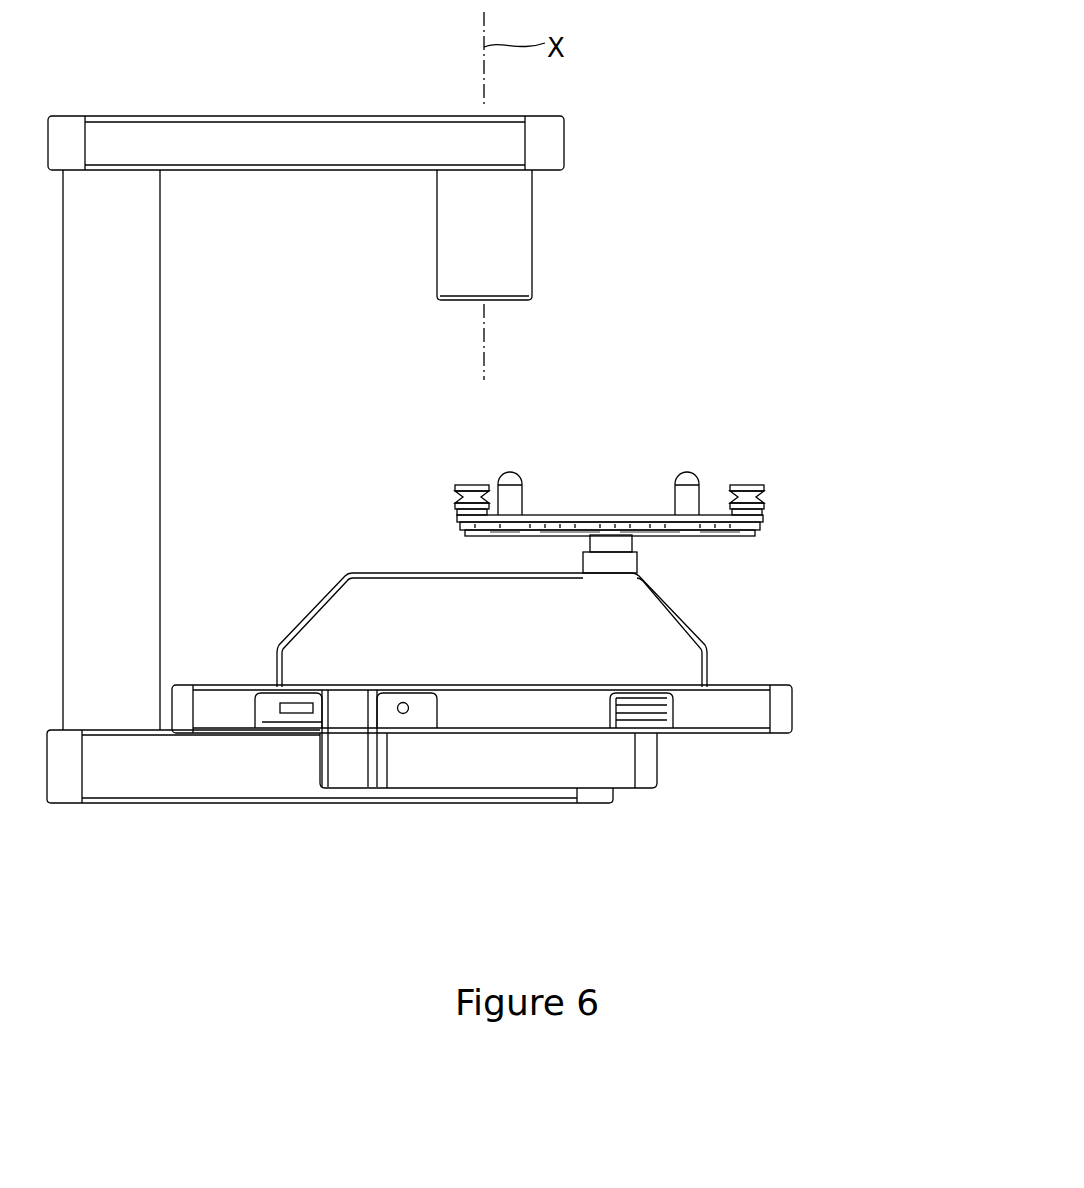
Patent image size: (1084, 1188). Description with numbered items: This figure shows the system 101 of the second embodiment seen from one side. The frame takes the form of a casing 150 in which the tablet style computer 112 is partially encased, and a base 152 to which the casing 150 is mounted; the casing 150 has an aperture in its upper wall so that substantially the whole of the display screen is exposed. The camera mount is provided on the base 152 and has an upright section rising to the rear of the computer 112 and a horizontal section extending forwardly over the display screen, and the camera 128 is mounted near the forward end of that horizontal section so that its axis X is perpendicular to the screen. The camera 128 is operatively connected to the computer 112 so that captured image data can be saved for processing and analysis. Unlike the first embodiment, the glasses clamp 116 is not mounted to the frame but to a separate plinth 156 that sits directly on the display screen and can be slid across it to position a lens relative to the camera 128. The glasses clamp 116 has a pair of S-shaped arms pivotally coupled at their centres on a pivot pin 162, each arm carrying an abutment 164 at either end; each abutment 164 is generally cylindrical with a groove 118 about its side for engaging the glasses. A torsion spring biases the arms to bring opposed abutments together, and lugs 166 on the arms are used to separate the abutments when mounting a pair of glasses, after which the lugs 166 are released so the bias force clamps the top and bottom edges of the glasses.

The system 101 is at (715, 212).
The camera 128 is at (500, 243).
The glasses clamp 116 is at (745, 537).
The abutment 164 is at (482, 485).
The groove 118 is at (460, 492).
The lug 166 is at (513, 495).
The pivot pin 162 is at (620, 540).
The plinth 156 is at (690, 650).
The casing 150 is at (793, 705).
The tablet style computer 112 is at (660, 714).
The base 152 is at (115, 767).